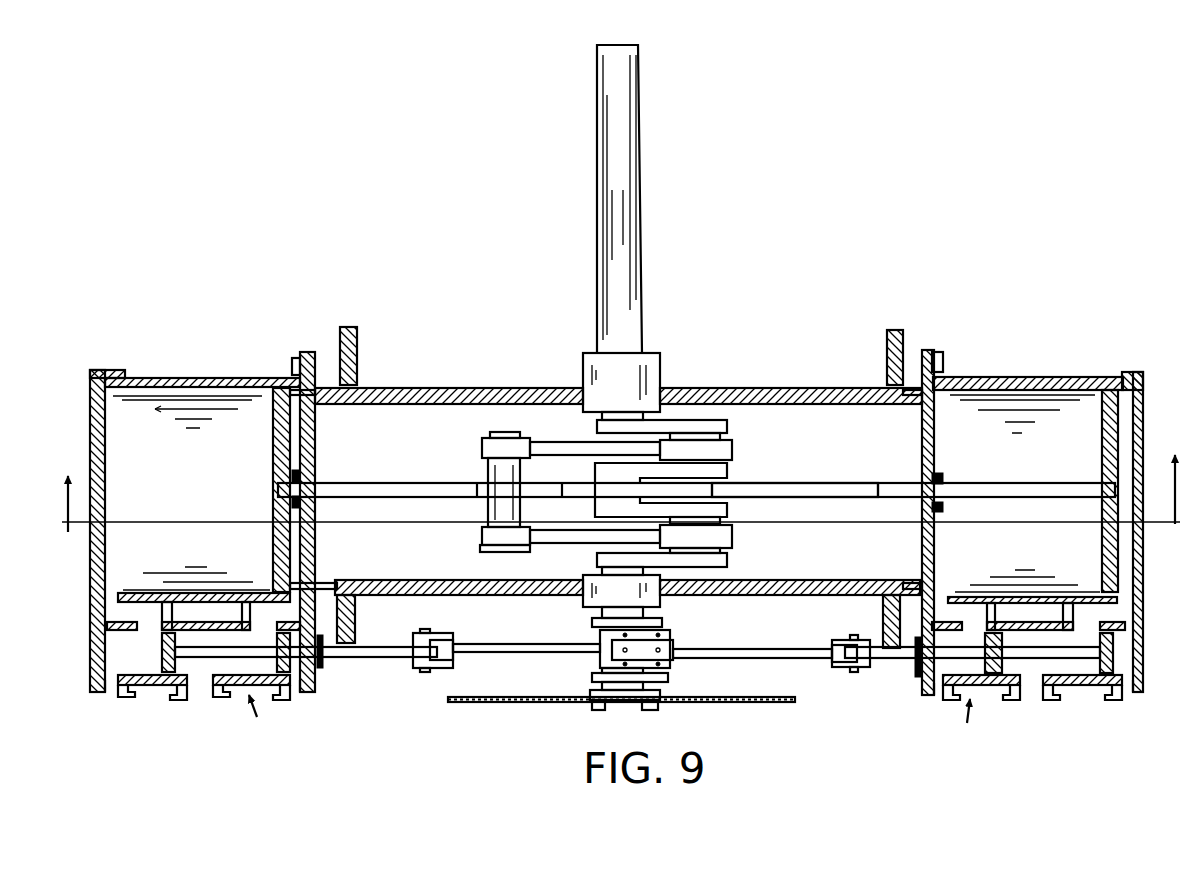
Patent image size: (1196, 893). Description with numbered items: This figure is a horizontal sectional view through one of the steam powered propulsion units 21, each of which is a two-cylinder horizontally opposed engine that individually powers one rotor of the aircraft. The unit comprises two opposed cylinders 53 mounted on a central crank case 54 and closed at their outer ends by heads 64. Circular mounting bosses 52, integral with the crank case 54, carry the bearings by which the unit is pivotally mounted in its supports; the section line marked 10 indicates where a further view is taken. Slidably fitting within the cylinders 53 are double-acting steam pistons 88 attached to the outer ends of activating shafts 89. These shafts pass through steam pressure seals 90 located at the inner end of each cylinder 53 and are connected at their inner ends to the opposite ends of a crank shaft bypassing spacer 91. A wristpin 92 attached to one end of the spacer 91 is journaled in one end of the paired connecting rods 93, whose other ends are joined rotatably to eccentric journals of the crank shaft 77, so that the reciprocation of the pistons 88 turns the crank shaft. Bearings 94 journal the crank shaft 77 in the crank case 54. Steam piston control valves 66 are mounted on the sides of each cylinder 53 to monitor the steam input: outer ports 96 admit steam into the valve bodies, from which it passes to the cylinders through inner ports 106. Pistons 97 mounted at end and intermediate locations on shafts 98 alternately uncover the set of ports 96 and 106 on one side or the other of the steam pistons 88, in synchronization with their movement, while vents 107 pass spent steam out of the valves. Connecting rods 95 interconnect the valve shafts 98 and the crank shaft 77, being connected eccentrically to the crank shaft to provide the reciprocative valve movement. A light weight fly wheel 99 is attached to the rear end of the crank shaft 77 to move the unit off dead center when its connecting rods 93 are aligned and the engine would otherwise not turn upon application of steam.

The section line 10- 10 is at (623, 516).
The propulsion unit 21 is at (950, 347).
The circular mounting bosses 52 is at (348, 355).
The cylinders 53 is at (187, 382).
The crank case 54 is at (740, 389).
The heads 64 is at (97, 411).
The steam piston control valves 66 is at (607, 718).
The crank shaft 77 is at (618, 318).
The double-acting steam pistons 88 is at (275, 463).
The activating shafts 89 is at (373, 490).
The steam pressure seals 90 is at (315, 475).
The crank shaft bypassing spacer 91 is at (740, 492).
The wristpin 92 is at (490, 505).
The connecting rods 93 is at (605, 450).
The bearings 94 is at (620, 377).
The connecting rods 95 is at (563, 652).
The outer ports 96 is at (203, 690).
The pistons 97 is at (160, 652).
The shafts 98 is at (363, 653).
The fly wheel 99 is at (568, 702).
The inner ports 106 is at (110, 598).
The vents 107 is at (110, 687).